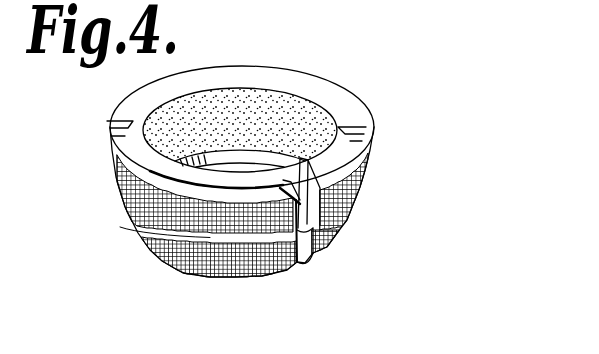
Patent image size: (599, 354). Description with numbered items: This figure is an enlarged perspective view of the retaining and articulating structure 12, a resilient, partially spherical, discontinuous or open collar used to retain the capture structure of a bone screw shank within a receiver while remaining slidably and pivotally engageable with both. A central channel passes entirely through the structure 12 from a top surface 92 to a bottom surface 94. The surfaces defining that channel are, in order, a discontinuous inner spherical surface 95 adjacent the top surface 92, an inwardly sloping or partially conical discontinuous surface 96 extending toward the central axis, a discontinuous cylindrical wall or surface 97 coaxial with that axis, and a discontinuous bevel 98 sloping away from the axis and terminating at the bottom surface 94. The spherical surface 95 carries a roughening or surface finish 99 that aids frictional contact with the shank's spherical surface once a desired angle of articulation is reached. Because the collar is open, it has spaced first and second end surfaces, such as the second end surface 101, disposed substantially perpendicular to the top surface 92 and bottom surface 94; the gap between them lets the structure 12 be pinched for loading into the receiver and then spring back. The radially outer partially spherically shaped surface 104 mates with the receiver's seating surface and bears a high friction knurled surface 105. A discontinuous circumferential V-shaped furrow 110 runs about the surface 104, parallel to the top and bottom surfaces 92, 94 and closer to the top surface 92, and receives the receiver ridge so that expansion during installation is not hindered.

The retaining and articulating structure 12 is at (370, 167).
The top surface 92 is at (303, 82).
The bottom surface 94 is at (217, 273).
The inner spherical surface 95 is at (113, 120).
The inwardly sloping surface 96 is at (290, 167).
The cylindrical surface 97 is at (367, 127).
The bevel 98 is at (240, 170).
The surface finish 99 is at (183, 120).
The second end surface 101 is at (318, 250).
The outer partially spherically shaped surface 104 is at (116, 185).
The knurled surface 105 is at (181, 262).
The V-shaped furrow 110 is at (313, 218).